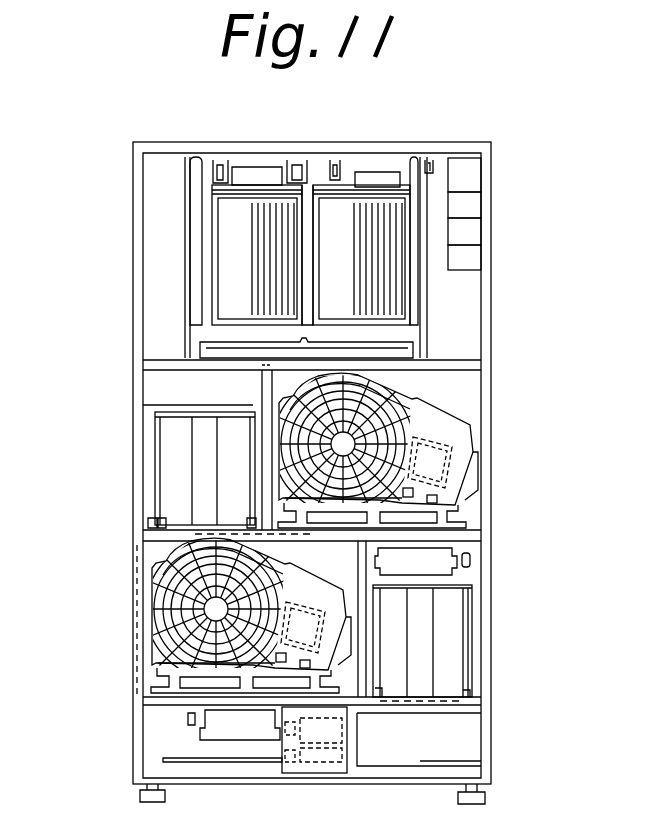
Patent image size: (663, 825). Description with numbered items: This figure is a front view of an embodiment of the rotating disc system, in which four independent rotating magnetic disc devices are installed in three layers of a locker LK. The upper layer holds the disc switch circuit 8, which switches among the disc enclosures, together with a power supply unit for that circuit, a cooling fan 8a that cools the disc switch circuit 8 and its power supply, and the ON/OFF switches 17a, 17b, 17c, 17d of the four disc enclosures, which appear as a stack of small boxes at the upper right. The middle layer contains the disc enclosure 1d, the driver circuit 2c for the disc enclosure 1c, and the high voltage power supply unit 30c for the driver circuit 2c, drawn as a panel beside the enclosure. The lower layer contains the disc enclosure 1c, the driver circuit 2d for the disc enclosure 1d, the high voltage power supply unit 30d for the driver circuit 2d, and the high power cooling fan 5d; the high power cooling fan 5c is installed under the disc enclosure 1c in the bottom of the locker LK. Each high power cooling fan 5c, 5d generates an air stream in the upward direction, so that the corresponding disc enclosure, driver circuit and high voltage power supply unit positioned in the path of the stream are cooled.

The locker LK is at (133, 158).
The disc switch circuit 8 is at (265, 275).
The cooling fan 8a is at (262, 170).
The ON/OFF switch 17a is at (458, 168).
The ON/OFF switch 17b is at (470, 205).
The ON/OFF switch 17c is at (470, 230).
The ON/OFF switch 17d is at (470, 258).
The high voltage power supply unit 30c is at (230, 437).
The driver circuit 2c is at (200, 483).
The disc enclosure 1d is at (486, 408).
The disc enclosure 1c is at (165, 640).
The high power cooling fan 5d is at (462, 560).
The driver circuit 2d is at (395, 598).
The high voltage power supply unit 30d is at (462, 665).
The high power cooling fan 5c is at (210, 725).